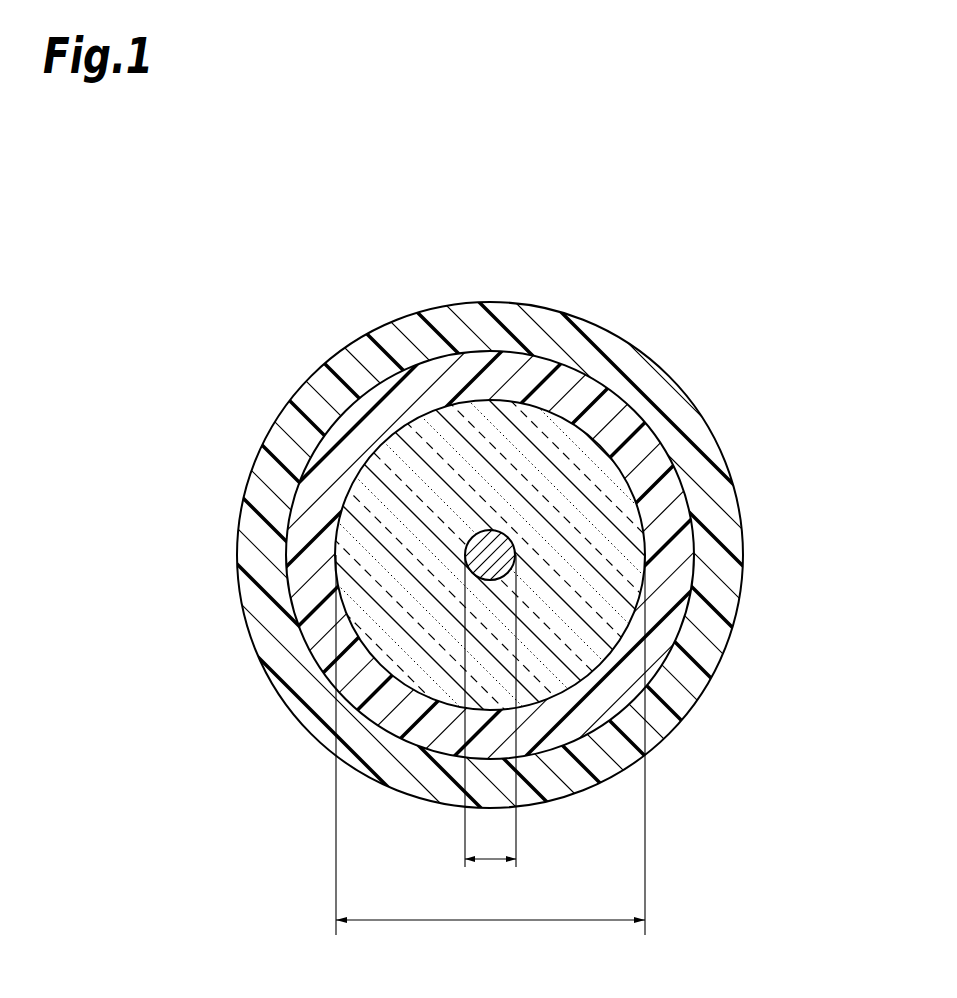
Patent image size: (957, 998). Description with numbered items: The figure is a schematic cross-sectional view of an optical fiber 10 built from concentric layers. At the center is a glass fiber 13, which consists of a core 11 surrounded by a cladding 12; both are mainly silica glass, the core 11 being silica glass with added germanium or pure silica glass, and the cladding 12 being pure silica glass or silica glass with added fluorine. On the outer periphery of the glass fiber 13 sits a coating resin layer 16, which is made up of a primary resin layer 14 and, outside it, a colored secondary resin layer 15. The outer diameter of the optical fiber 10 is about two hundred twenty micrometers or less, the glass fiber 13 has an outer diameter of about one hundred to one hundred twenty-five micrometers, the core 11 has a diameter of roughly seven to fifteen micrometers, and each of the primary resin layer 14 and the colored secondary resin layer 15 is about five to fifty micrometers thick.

The optical fiber 10 is at (272, 240).
The core 11 is at (502, 548).
The cladding 12 is at (612, 528).
The glass fiber 13 is at (478, 552).
The primary resin layer 14 is at (685, 573).
The colored secondary resin layer 15 is at (720, 638).
The coating resin layer 16 is at (478, 552).